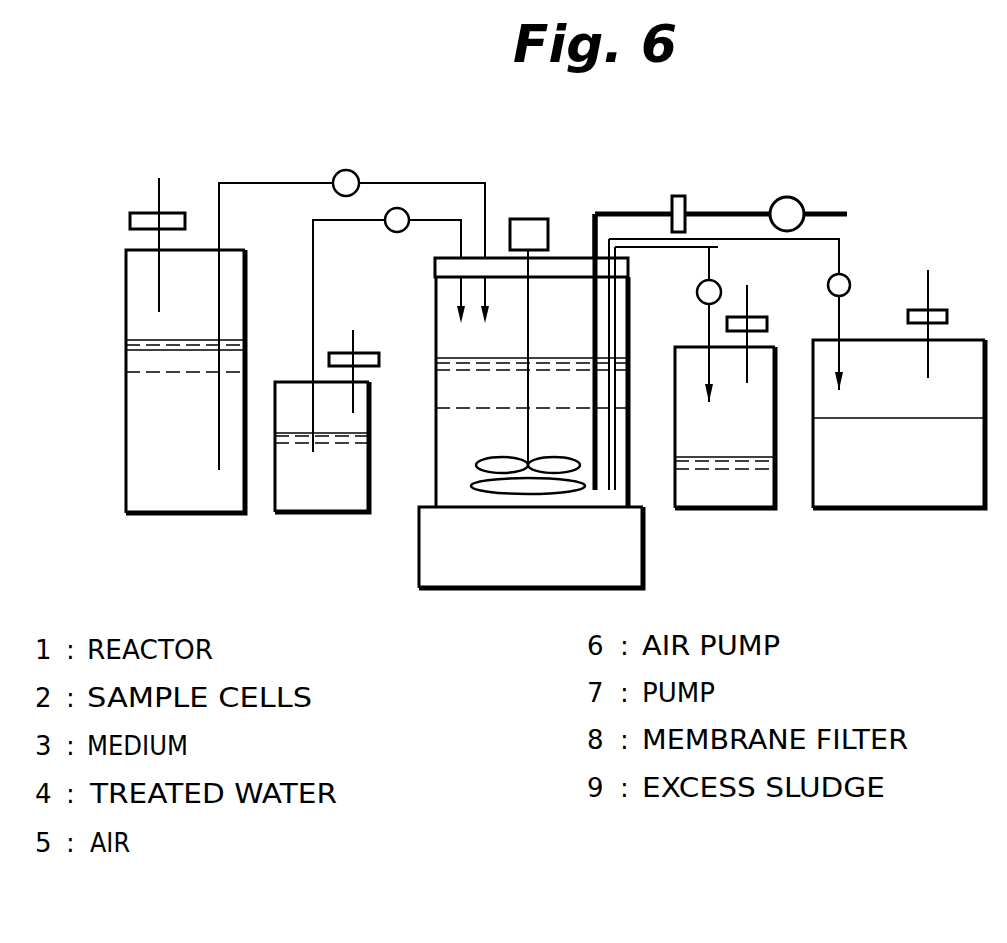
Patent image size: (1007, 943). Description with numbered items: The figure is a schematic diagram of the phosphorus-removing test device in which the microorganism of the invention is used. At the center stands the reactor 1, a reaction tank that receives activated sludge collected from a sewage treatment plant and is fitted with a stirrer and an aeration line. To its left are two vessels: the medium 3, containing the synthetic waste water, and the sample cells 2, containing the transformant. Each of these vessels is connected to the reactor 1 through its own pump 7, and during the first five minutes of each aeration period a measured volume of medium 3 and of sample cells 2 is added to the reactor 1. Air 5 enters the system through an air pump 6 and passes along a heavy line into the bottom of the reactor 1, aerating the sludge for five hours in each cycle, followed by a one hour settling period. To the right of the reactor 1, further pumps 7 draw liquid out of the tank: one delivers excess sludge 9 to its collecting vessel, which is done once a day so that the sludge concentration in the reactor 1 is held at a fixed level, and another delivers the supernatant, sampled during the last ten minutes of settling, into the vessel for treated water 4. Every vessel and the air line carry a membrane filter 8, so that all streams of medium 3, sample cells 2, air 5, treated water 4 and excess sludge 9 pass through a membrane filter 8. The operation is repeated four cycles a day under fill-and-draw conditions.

The reactor 1 is at (628, 462).
The sample cells 2 is at (316, 507).
The medium 3 is at (167, 497).
The treated water 4 is at (910, 487).
The air 5 is at (733, 229).
The air pump 6 is at (787, 197).
The pump 7 is at (601, 271).
The membrane filter 8 is at (535, 288).
The excess sludge 9 is at (757, 512).